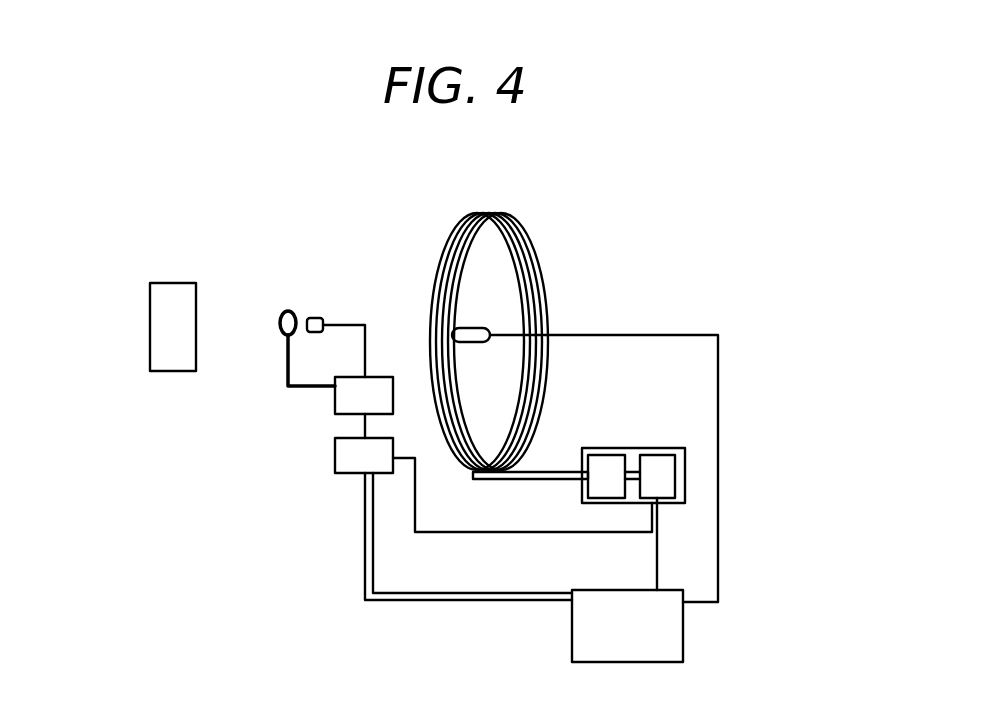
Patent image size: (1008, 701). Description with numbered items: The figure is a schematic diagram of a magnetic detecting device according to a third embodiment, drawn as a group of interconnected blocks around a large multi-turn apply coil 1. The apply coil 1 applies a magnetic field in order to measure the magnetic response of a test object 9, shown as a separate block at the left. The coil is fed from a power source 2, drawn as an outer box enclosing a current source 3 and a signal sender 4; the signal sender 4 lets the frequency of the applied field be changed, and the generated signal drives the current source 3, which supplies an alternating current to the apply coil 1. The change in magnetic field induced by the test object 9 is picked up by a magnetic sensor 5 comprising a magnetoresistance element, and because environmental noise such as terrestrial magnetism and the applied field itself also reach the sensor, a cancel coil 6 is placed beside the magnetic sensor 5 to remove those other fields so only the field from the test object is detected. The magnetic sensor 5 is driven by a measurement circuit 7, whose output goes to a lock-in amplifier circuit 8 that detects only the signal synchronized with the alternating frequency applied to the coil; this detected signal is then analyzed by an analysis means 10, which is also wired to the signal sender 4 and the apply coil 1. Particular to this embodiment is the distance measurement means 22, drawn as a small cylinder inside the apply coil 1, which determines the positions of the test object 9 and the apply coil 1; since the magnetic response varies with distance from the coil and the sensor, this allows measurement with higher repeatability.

The apply coil 1 is at (538, 290).
The distance measurement means 22 is at (484, 330).
The power source 2 is at (678, 448).
The current source 3 is at (603, 463).
The signal sender 4 is at (672, 482).
The magnetic sensor 5 is at (318, 313).
The cancel coil 6 is at (280, 313).
The measurement circuit 7 is at (347, 402).
The lock-in amplifier circuit 8 is at (370, 458).
The test object 9 is at (162, 333).
The analysis means 10 is at (673, 637).